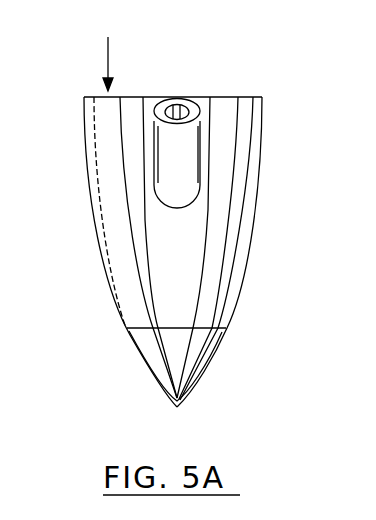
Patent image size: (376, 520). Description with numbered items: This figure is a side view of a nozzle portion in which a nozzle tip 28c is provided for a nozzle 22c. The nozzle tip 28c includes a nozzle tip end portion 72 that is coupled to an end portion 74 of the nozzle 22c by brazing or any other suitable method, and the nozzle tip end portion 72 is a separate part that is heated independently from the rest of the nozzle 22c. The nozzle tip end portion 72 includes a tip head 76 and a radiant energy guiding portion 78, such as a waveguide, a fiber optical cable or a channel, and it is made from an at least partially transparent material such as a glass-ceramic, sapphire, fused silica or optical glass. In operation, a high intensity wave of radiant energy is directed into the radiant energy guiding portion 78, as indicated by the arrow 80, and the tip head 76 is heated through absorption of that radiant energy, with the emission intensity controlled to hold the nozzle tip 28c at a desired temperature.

The nozzle 22c is at (272, 98).
The nozzle tip 28c is at (200, 350).
The nozzle tip end portion 72 is at (117, 323).
The nozzle end portion 74 is at (232, 258).
The tip head 76 is at (172, 357).
The radiant energy guiding portion 78 is at (105, 219).
The arrow 80 is at (108, 57).